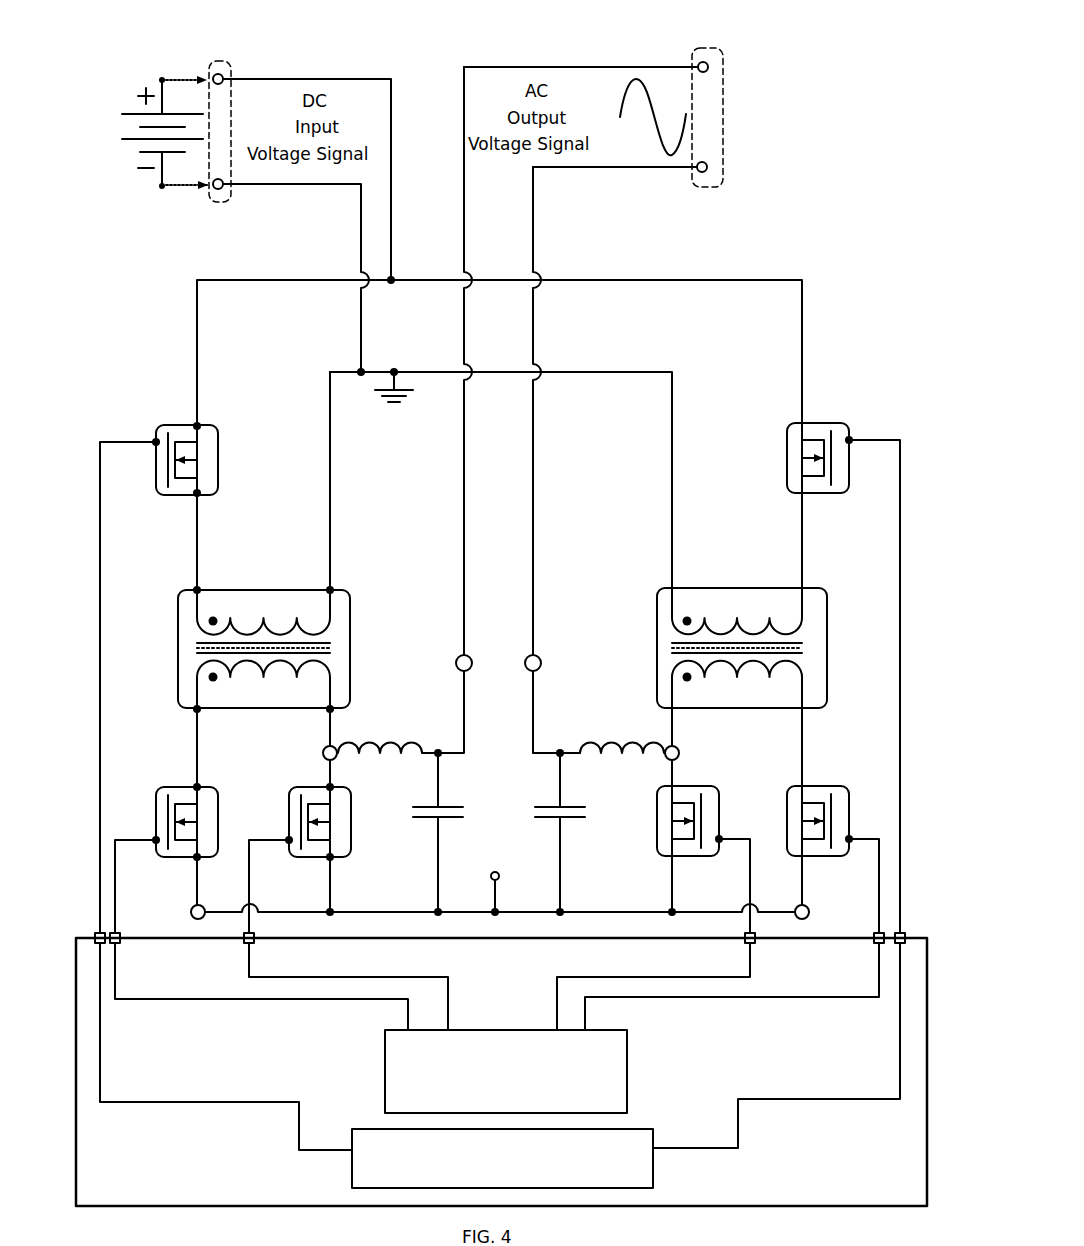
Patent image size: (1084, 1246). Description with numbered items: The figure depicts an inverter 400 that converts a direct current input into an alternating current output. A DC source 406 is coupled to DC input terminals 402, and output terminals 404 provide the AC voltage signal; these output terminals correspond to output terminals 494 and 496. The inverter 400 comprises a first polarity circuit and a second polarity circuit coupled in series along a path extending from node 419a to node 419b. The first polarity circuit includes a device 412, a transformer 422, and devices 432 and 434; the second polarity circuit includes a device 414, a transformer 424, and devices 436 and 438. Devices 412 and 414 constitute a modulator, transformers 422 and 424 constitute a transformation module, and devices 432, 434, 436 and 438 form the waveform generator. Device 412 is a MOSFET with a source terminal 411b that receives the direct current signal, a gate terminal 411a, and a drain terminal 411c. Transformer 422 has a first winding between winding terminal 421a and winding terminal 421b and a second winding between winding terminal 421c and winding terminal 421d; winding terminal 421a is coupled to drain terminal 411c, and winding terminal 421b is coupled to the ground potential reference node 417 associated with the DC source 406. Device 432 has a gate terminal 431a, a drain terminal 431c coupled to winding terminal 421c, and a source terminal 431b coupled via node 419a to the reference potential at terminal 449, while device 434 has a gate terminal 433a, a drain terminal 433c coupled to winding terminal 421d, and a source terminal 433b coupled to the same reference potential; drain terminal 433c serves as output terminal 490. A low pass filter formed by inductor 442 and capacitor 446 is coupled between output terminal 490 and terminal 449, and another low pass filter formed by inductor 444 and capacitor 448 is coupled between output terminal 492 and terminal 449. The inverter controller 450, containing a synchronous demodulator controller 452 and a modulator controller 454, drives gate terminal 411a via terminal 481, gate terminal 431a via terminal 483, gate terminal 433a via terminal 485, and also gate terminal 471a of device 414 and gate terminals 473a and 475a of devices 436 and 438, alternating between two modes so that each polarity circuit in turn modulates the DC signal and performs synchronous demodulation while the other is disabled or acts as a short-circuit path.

The inverter 400 is at (130, 43).
The DC input terminals 402 is at (217, 58).
The output terminals 404 is at (690, 44).
The DC source 406 is at (150, 200).
The device Q1 412 is at (188, 424).
The device Q2 414 is at (818, 423).
The gate terminal 411a is at (154, 445).
The source terminal 411b is at (199, 423).
The drain terminal 411c is at (199, 496).
The ground potential reference node 417 is at (395, 370).
The gate terminal 471a is at (851, 438).
The transformer T1 422 is at (183, 589).
The transformer T2 424 is at (820, 588).
The winding terminal 421a is at (199, 588).
The winding terminal 421b is at (332, 588).
The winding terminal 421c is at (199, 711).
The winding terminal 421d is at (328, 711).
The output terminal 494 is at (456, 653).
The output terminal 496 is at (542, 653).
The output terminal 490 is at (337, 745).
The output terminal 492 is at (666, 745).
The inductor L1 442 is at (408, 743).
The inductor L2 444 is at (594, 743).
The capacitor C1 446 is at (418, 820).
The capacitor C2 448 is at (578, 820).
The terminal 449 is at (498, 880).
The device Q3 432 is at (160, 788).
The gate terminal 431a is at (155, 838).
The source terminal 431b is at (199, 860).
The drain terminal 431c is at (193, 785).
The device Q4 434 is at (353, 820).
The gate terminal 433a is at (288, 838).
The source terminal 433b is at (332, 860).
The drain terminal 433c is at (326, 785).
The device Q5 436 is at (690, 785).
The device Q6 438 is at (818, 785).
The gate terminal 473a is at (719, 836).
The gate terminal 475a is at (848, 836).
The node 419a is at (191, 910).
The node 419b is at (809, 910).
The terminal 481 is at (100, 931).
The terminal 483 is at (116, 945).
The terminal 485 is at (249, 945).
The inverter controller 450 is at (501, 1072).
The synchronous demodulator controller 452 is at (506, 1071).
The modulator controller 454 is at (502, 1158).